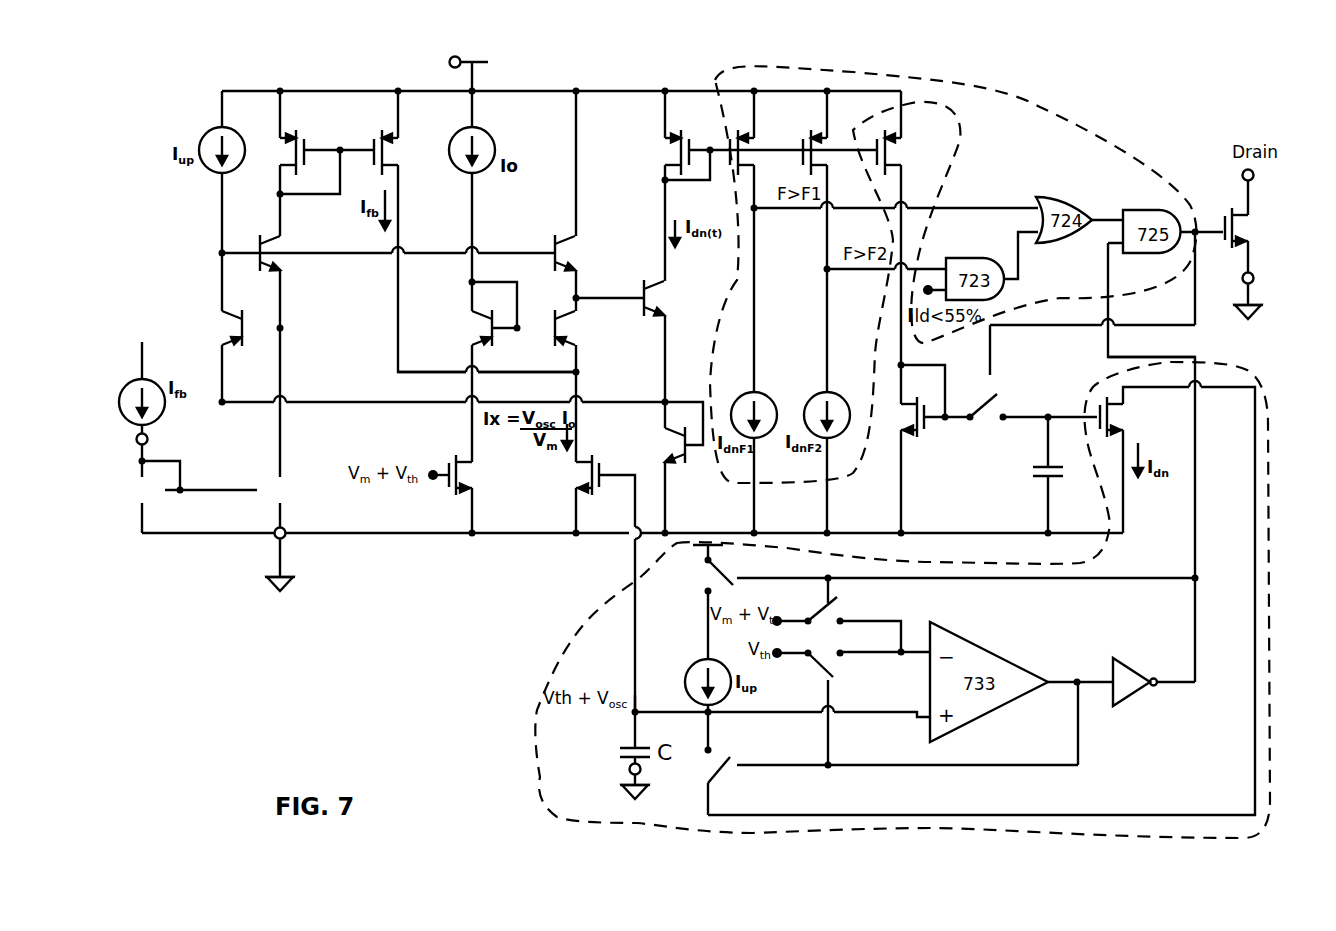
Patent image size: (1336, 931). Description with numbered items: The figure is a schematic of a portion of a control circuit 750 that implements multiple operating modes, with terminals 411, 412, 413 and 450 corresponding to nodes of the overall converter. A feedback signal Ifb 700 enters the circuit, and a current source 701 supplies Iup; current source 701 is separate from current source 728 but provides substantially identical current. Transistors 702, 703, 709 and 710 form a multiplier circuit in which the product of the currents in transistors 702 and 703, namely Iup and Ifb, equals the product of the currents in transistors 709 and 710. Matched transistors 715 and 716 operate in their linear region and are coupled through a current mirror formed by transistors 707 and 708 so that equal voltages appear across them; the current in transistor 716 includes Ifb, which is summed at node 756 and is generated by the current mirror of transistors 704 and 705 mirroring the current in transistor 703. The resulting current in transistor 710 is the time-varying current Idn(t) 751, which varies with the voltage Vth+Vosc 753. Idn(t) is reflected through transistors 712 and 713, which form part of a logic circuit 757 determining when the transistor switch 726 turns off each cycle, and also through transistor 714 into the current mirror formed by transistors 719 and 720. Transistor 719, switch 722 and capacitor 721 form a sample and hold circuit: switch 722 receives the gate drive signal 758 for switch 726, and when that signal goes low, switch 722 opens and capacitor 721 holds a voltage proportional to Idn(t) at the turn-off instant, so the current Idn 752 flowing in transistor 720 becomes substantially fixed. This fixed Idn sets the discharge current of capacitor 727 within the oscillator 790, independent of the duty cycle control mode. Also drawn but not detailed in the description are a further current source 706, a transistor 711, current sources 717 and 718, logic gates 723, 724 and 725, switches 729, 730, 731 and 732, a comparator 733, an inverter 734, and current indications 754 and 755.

The feedback signal Ifb 700 is at (167, 404).
The current source 701 is at (199, 150).
The transistor 702 is at (212, 324).
The transistor 703 is at (287, 257).
The transistor 704 is at (318, 138).
The transistor 705 is at (405, 155).
The current source Io 706 is at (507, 148).
The transistor 707 is at (465, 325).
The transistor 708 is at (578, 327).
The transistor 709 is at (580, 254).
The transistor 710 is at (668, 298).
The PMOS transistor 711 is at (664, 150).
The transistor 712 is at (757, 138).
The transistor 713 is at (827, 138).
The transistor 714 is at (912, 140).
The transistor 715 is at (477, 482).
The transistor 716 is at (577, 478).
The current source IdnF1 717 is at (742, 395).
The current source IdnF2 718 is at (817, 395).
The transistor 719 is at (925, 438).
The transistor 720 is at (1122, 418).
The capacitor 721 is at (1028, 472).
The switch 722 is at (1003, 401).
The AND gate 723 is at (975, 279).
The OR gate 724 is at (1064, 220).
The AND gate 725 is at (1152, 231).
The transistor switch 726 is at (1250, 231).
The capacitor 727 is at (628, 742).
The current source 728 is at (687, 667).
The switch 729 is at (705, 577).
The switch 730 is at (705, 767).
The switch 731 is at (837, 611).
The switch 732 is at (837, 663).
The comparator 733 is at (989, 682).
The inverter 734 is at (1140, 693).
The circuit 750 is at (210, 56).
The current Idn(t) 751 is at (674, 217).
The current Idn 752 is at (1170, 473).
The oscillator voltage Vosc 753 is at (600, 681).
The current Ifb 754 is at (395, 203).
The current Ix 755 is at (573, 422).
The node 756 is at (585, 373).
The logic circuit 757 is at (733, 70).
The gate drive signal 758 is at (1202, 327).
The oscillator 790 is at (530, 770).
The terminal 411 is at (268, 537).
The terminal 412 is at (449, 62).
The terminal 413 is at (148, 441).
The terminal 450 is at (1240, 177).